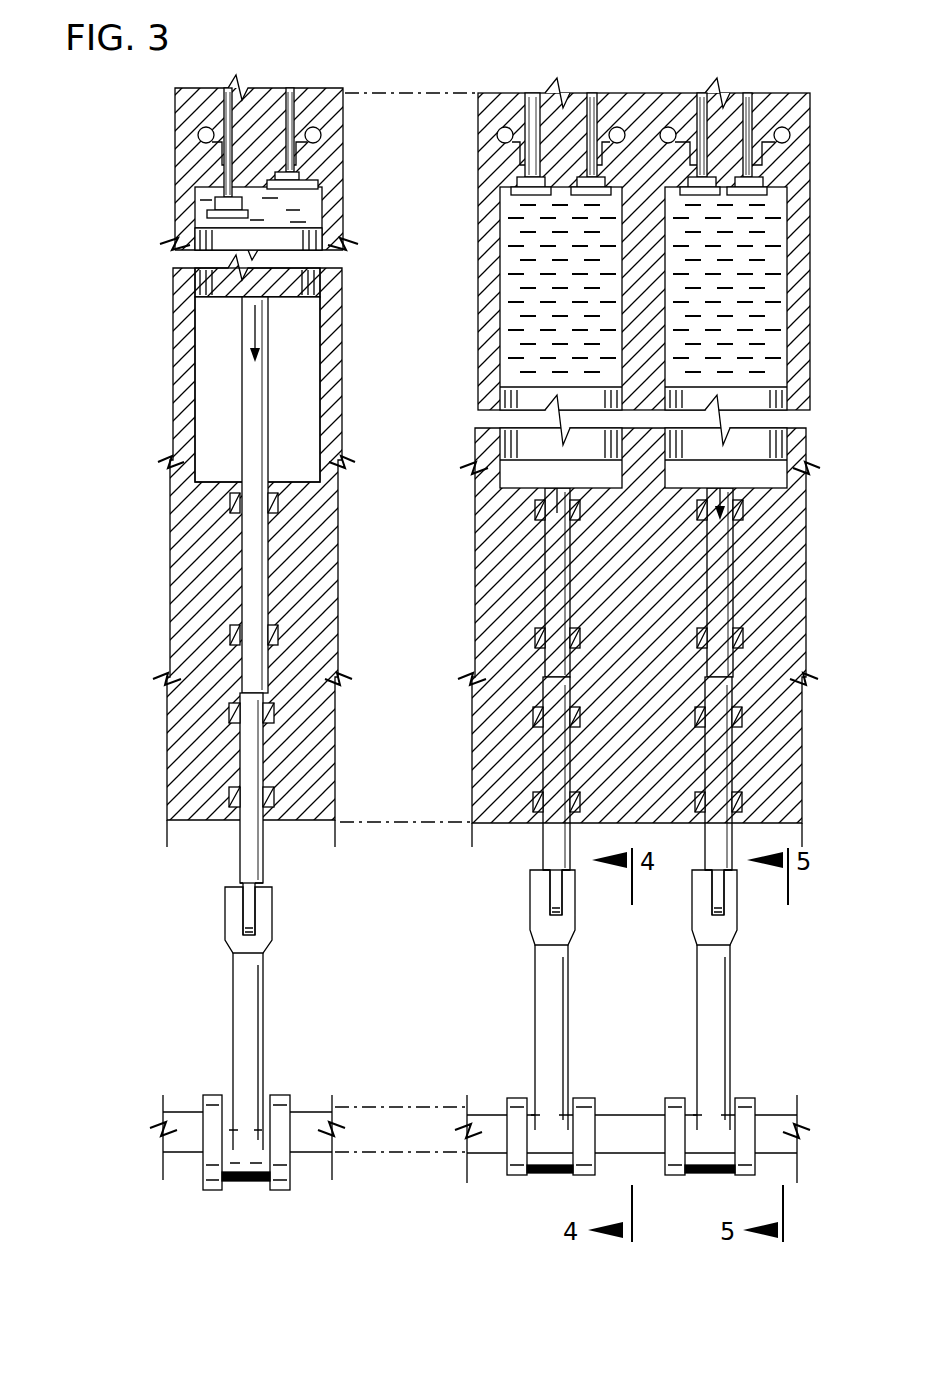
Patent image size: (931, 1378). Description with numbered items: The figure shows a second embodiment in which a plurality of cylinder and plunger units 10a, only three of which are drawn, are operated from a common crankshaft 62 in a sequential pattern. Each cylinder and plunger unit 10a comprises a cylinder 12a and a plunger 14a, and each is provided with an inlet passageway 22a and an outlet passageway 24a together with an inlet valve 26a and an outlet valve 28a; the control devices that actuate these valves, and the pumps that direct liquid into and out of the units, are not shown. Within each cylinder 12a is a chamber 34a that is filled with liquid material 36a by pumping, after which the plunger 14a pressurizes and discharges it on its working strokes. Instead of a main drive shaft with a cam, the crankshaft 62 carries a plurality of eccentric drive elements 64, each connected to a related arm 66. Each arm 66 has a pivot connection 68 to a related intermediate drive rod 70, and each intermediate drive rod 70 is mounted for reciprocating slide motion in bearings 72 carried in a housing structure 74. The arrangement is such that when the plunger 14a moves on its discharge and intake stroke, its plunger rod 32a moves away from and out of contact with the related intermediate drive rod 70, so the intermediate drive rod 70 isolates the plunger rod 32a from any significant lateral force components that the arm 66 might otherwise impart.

The cylinder and plunger unit 10a is at (168, 323).
The cylinder 12a is at (168, 360).
The plunger 14a is at (190, 242).
The inlet passageway 22a is at (200, 133).
The outlet passageway 24a is at (320, 130).
The inlet valve 26a is at (207, 212).
The outlet valve 28a is at (305, 178).
The plunger rod 32a is at (247, 393).
The chamber 34a is at (205, 205).
The liquid material 36a is at (305, 212).
The crankshaft 62 is at (311, 1155).
The eccentric drive element 64 is at (243, 1187).
The arm 66 is at (243, 1005).
The pivot connection 68 is at (240, 908).
The intermediate drive rod 70 is at (240, 850).
The bearings 72 is at (278, 793).
The housing structure 74 is at (175, 750).